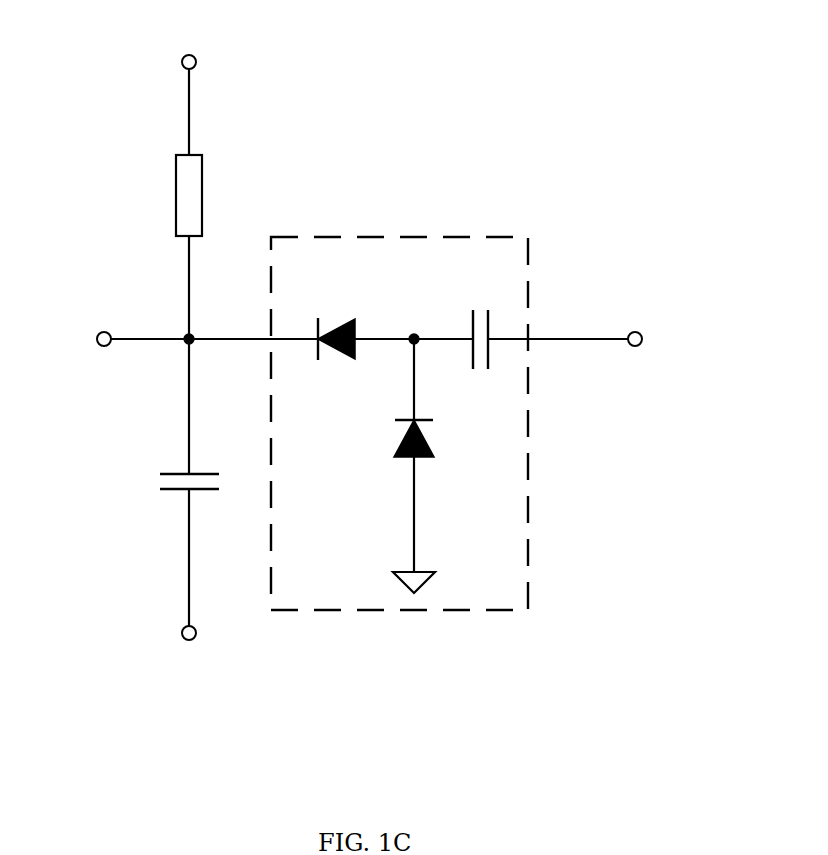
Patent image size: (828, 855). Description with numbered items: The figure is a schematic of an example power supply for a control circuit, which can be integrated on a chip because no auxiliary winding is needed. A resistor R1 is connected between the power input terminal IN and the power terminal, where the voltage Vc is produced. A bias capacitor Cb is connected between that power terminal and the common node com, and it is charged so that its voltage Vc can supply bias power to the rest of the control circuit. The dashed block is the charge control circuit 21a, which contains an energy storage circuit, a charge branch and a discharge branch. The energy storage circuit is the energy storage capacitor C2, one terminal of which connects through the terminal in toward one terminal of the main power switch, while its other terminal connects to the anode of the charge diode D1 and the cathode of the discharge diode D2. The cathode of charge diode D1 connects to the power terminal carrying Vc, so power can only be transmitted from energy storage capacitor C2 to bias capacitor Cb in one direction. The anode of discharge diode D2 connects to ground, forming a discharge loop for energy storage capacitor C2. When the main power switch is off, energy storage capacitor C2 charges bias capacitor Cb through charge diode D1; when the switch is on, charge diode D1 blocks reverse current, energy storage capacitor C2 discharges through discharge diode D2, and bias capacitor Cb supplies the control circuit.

The charge control circuit 21a is at (420, 236).
The resistor R1 is at (140, 195).
The bias capacitor Cb is at (148, 478).
The charge diode D1 is at (332, 316).
The discharge diode D2 is at (446, 466).
The energy storage capacitor C2 is at (481, 321).
The power input terminal IN is at (190, 35).
The voltage Vc is at (72, 341).
The input terminal in is at (668, 334).
The common node com is at (190, 657).